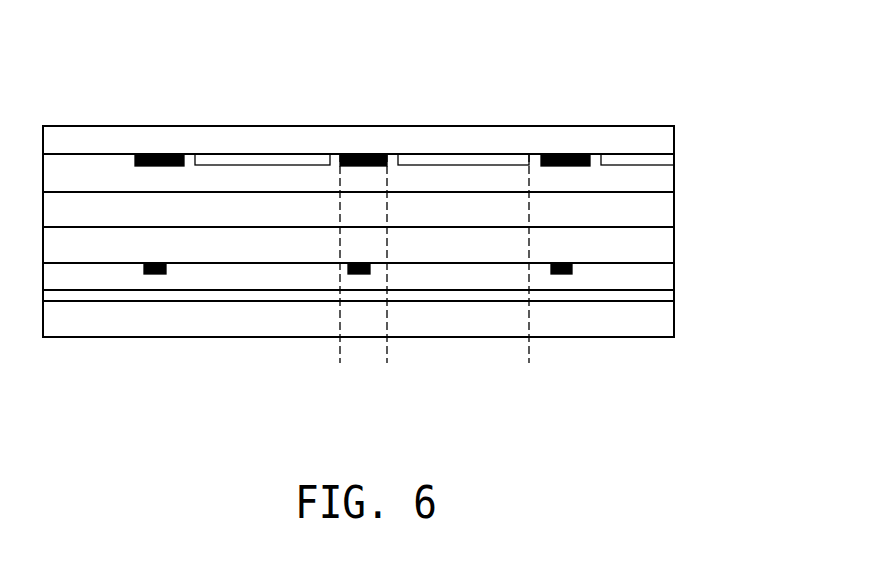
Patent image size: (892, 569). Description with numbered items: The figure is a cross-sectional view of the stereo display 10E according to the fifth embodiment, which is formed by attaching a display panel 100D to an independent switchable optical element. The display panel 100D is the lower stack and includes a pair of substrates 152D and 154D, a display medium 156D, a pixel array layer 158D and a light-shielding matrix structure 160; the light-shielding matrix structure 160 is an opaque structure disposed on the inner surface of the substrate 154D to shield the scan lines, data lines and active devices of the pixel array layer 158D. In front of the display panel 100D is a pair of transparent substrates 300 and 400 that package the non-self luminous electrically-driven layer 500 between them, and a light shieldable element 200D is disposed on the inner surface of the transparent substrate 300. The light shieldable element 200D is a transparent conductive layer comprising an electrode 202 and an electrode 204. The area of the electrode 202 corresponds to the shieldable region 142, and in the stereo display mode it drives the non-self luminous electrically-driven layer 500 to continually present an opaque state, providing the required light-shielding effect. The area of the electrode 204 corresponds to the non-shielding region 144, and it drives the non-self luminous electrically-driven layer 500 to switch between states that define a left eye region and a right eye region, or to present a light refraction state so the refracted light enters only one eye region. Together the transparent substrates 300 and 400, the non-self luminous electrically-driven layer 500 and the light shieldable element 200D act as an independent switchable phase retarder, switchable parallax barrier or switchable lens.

The transparent substrate 300 is at (655, 143).
The non-self luminous electrically-driven layer 500 is at (657, 177).
The light shieldable element 200D is at (460, 53).
The electrode 202 is at (366, 154).
The electrode 204 is at (460, 160).
The transparent substrate 400 is at (291, 210).
The display panel 100D is at (773, 198).
The substrate 154D is at (660, 247).
The display medium 156D is at (660, 278).
The pixel array layer 158D is at (660, 298).
The substrate 152D is at (657, 318).
The light-shielding matrix structure 160 is at (571, 275).
The shieldable region 142 is at (387, 350).
The non-shielding region 144 is at (530, 350).
The stereo display 10E is at (698, 440).